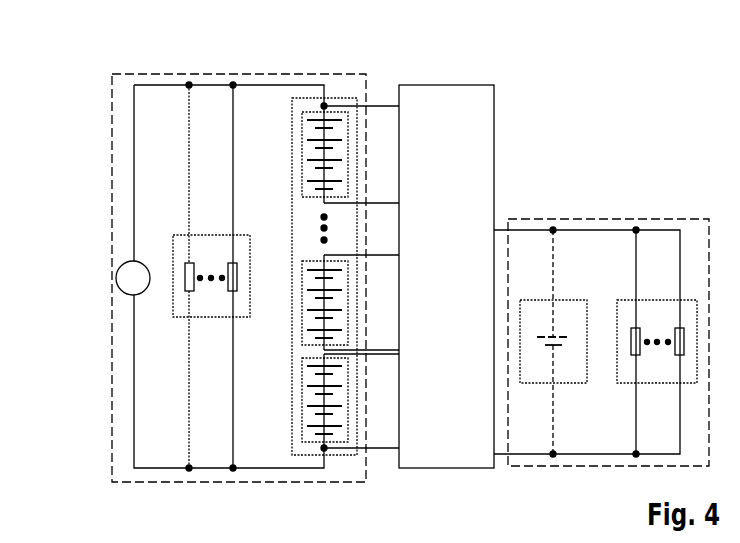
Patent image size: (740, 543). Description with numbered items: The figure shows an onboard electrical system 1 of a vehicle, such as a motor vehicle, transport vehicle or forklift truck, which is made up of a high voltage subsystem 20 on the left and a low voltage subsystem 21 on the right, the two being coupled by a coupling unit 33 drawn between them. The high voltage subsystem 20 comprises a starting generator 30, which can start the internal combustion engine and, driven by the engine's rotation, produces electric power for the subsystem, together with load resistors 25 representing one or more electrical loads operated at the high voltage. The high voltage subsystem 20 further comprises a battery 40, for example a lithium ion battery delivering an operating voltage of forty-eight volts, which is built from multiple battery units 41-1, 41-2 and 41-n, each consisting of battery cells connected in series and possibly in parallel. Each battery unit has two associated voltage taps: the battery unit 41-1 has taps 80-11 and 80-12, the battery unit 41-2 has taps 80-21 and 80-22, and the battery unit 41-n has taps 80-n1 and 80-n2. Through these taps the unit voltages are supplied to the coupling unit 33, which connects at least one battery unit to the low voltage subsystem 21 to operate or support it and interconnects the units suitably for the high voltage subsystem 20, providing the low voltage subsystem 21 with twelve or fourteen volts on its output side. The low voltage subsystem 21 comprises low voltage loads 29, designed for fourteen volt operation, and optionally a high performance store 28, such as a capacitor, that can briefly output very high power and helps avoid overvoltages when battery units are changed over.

The onboard electrical system 1 is at (658, 71).
The high voltage subsystem 20 is at (238, 72).
The low voltage subsystem 21 is at (606, 217).
The load resistors 25 is at (210, 233).
The high performance store 28 is at (531, 298).
The low voltage loads 29 is at (660, 298).
The starting generator 30 is at (146, 289).
The coupling unit 33 is at (446, 84).
The battery 40 is at (345, 95).
The battery unit 41-n is at (292, 150).
The battery unit 41-2 is at (292, 330).
The battery unit 41-1 is at (292, 396).
The voltage tap 80-n2 is at (388, 107).
The voltage tap 80-n1 is at (388, 203).
The voltage tap 80-22 is at (388, 255).
The voltage tap 80-21 is at (388, 349).
The voltage tap 80-12 is at (388, 355).
The voltage tap 80-11 is at (388, 448).